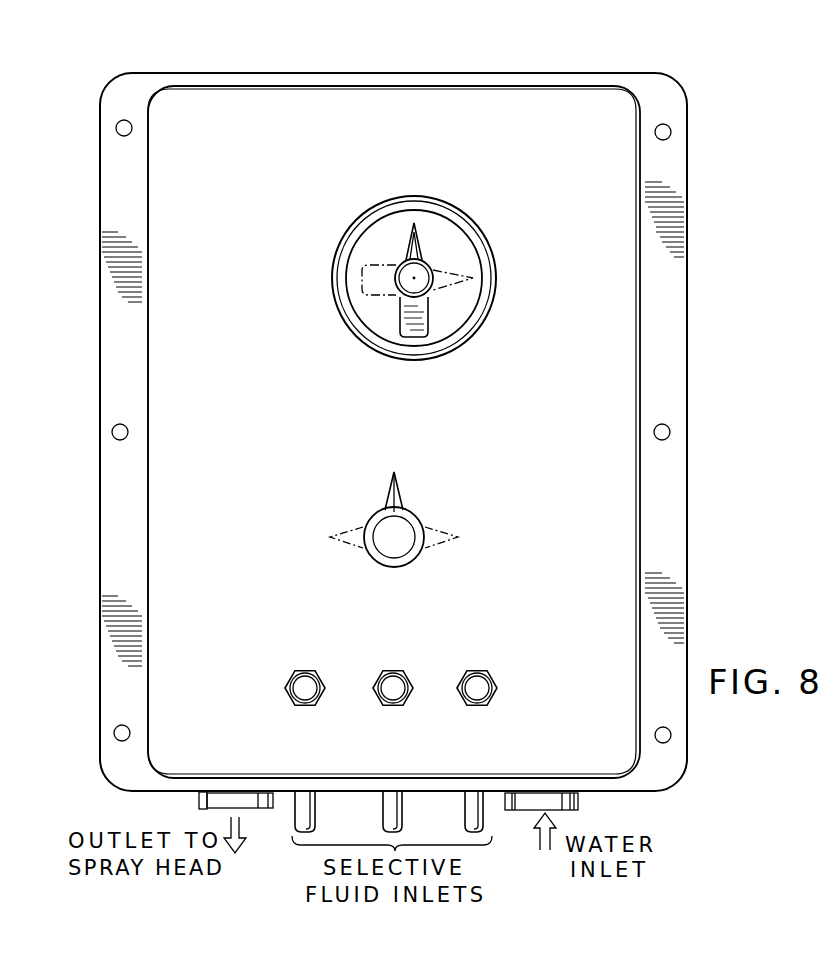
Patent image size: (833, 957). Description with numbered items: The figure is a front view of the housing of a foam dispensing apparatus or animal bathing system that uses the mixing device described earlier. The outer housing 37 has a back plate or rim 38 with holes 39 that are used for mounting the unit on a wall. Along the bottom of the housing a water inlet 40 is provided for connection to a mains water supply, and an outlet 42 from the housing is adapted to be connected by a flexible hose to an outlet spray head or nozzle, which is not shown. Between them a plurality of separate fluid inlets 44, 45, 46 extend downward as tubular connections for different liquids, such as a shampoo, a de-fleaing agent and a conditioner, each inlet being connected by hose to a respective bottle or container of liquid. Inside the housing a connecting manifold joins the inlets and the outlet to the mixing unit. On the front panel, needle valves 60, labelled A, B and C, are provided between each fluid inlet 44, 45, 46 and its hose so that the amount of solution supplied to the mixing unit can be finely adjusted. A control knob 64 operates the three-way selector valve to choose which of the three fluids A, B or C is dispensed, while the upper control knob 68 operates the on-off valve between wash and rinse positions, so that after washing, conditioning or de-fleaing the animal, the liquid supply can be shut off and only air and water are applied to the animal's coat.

The outer housing 37 is at (502, 101).
The back plate or rim 38 is at (676, 194).
The holes 39 is at (672, 129).
The water inlet 40 is at (578, 803).
The outlet 42 is at (198, 800).
The fluid inlet 44 is at (472, 807).
The fluid inlet 45 is at (388, 815).
The fluid inlet 46 is at (307, 803).
The needle valves 60 is at (471, 681).
The control knob 64 is at (400, 546).
The control knob 68 is at (404, 288).